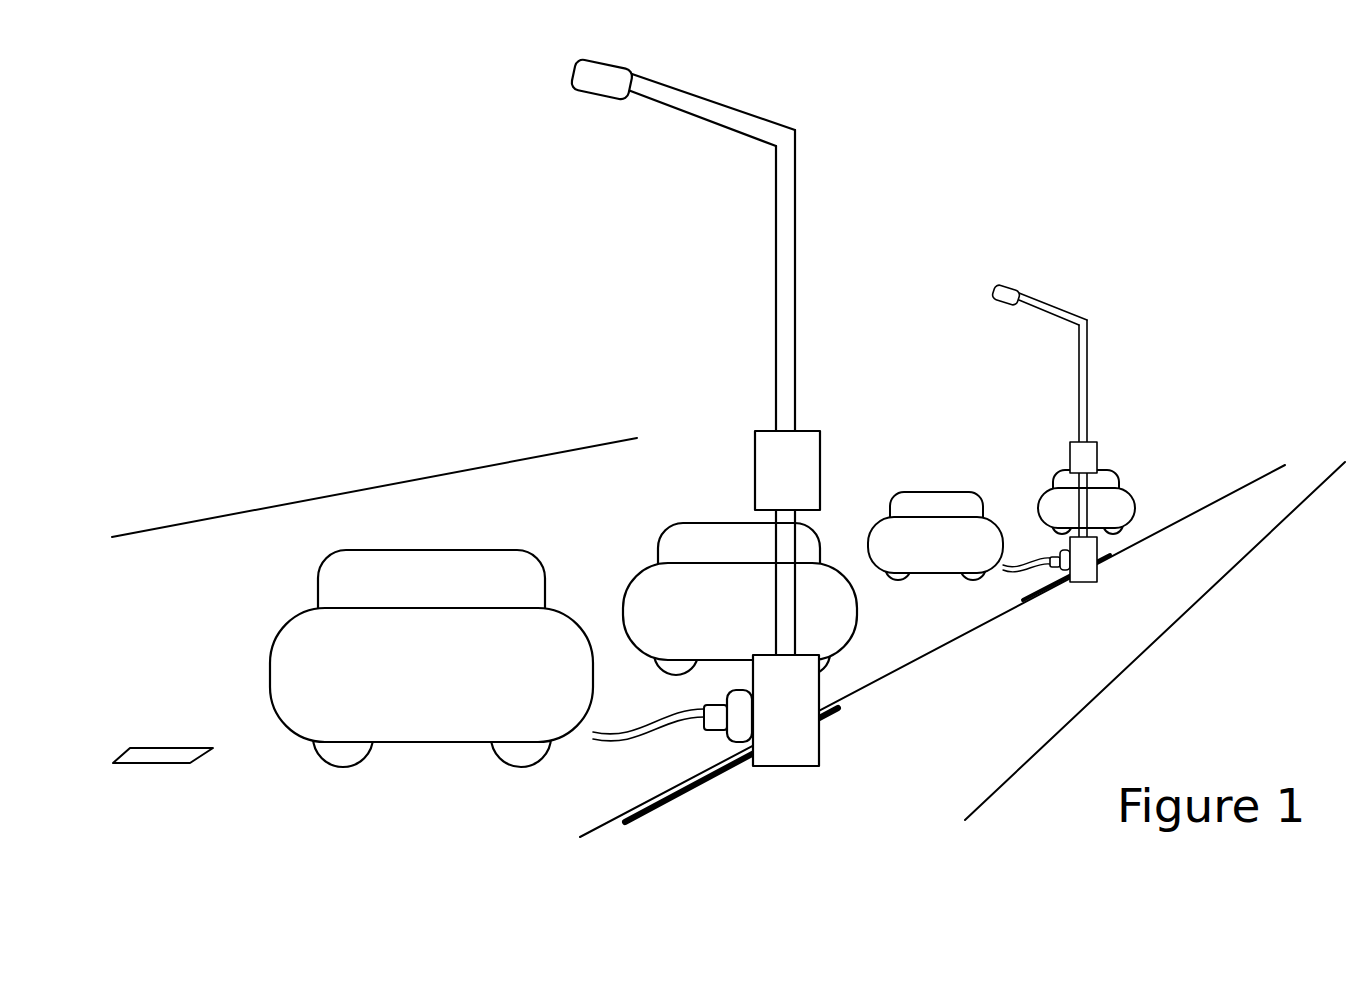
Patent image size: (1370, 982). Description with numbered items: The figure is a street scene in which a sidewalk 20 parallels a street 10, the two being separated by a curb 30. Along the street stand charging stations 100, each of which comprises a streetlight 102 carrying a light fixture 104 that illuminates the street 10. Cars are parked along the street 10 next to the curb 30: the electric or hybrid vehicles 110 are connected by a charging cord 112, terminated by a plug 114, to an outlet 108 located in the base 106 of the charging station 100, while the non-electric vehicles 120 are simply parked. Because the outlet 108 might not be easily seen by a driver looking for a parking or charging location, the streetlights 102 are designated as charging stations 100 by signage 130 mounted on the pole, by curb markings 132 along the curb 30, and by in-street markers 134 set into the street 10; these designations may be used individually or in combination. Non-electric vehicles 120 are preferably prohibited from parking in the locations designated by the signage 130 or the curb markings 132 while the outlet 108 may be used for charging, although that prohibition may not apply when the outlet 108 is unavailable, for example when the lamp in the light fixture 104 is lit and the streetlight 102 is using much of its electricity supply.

The street 10 is at (541, 517).
The sidewalk 20 is at (996, 742).
The curb 30 is at (932, 651).
The charging station 100 is at (826, 792).
The streetlight 102 is at (776, 263).
The light fixture 104 is at (573, 87).
The base 106 is at (819, 747).
The outlet 108 is at (727, 708).
The electric vehicle 110 is at (370, 550).
The charging cord 112 is at (610, 748).
The plug 114 is at (708, 728).
The non-electric vehicle 120 is at (700, 522).
The signage 130 is at (755, 478).
The curb marking 132 is at (703, 783).
The in-street marker 134 is at (147, 748).